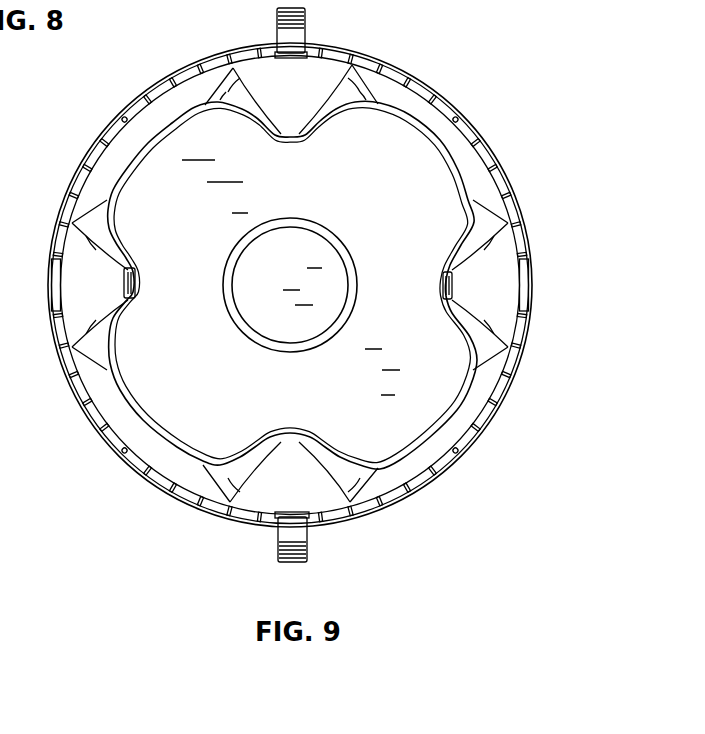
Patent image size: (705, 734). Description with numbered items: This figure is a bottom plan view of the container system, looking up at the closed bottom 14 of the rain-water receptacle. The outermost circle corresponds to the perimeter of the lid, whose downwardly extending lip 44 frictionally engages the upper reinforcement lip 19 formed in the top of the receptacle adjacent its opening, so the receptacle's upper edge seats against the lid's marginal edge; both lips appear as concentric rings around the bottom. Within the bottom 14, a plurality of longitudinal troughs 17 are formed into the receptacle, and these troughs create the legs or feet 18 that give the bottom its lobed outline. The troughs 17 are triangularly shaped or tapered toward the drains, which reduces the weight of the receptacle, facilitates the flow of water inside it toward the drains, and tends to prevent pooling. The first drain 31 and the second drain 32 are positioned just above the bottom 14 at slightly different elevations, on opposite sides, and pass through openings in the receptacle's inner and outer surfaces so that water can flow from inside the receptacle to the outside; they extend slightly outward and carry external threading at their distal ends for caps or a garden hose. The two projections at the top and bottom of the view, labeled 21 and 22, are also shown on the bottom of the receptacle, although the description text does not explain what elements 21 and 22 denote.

The closed bottom 14 is at (443, 378).
The longitudinal troughs 17 is at (292, 460).
The legs or feet 18 is at (430, 410).
The reinforcement lip 19 is at (497, 157).
The upper threaded stud 21 is at (299, 37).
The lower threaded stud 22 is at (301, 534).
The first drain 31 is at (453, 288).
The second drain 32 is at (123, 287).
The downwardly extending lip 44 is at (453, 97).